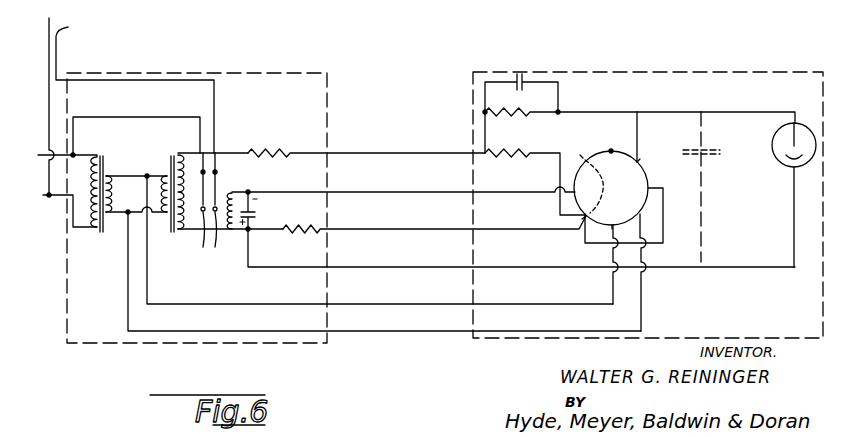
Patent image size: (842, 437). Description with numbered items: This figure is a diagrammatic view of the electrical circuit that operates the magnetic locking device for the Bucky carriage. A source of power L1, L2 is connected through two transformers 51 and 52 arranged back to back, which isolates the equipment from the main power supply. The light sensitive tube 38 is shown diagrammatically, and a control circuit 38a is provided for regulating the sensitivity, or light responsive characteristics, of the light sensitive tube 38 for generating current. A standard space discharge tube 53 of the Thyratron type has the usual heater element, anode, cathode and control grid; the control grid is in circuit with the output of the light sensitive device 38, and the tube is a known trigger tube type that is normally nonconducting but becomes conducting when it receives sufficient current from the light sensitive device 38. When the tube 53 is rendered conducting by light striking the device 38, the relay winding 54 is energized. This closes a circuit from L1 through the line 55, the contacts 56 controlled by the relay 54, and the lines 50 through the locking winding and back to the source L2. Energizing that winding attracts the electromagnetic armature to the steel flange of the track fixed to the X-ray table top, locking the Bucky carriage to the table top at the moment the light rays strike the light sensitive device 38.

The lines 50 is at (49, 30).
The source of power L1 is at (95, 141).
The source of power L2 is at (77, 231).
The transformer 51 is at (79, 194).
The transformer 52 is at (175, 232).
The space discharge tube 53 is at (598, 153).
The relay winding 54 is at (232, 193).
The line 55 is at (153, 117).
The contacts 56 is at (212, 207).
The light sensitive tube 38 is at (796, 122).
The control circuit 38a is at (704, 178).